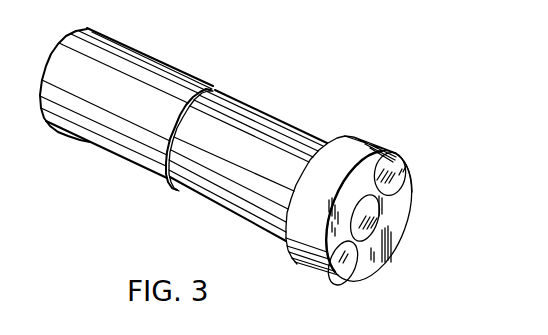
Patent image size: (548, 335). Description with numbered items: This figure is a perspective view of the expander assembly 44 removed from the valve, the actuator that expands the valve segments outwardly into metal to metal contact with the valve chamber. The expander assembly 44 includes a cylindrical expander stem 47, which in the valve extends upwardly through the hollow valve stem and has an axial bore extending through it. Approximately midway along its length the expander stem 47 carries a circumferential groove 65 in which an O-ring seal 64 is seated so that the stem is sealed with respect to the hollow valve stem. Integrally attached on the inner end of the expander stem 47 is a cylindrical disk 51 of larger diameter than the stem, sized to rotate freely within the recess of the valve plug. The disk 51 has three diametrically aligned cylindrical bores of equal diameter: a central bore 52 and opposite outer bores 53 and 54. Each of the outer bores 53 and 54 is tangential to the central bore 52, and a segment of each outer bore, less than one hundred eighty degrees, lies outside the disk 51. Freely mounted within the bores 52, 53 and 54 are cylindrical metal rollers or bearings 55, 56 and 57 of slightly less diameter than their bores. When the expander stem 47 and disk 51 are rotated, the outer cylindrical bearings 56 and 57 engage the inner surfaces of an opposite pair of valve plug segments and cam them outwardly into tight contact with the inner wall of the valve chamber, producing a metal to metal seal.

The expander assembly 44 is at (329, 77).
The expander stem 47 is at (167, 64).
The cylindrical disk 51 is at (411, 199).
The central bore 52 is at (347, 230).
The outer bore 53 is at (357, 263).
The outer bore 54 is at (393, 188).
The cylindrical bearing 55 is at (374, 219).
The cylindrical bearing 56 is at (347, 284).
The cylindrical bearing 57 is at (404, 156).
The O-ring seal 64 is at (226, 95).
The circumferential groove 65 is at (212, 96).